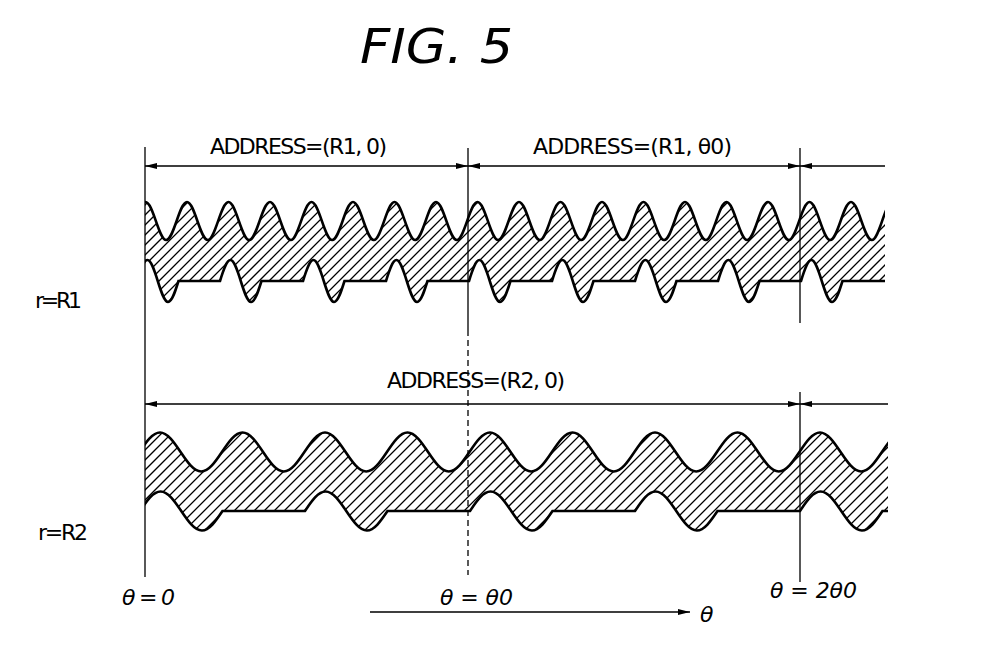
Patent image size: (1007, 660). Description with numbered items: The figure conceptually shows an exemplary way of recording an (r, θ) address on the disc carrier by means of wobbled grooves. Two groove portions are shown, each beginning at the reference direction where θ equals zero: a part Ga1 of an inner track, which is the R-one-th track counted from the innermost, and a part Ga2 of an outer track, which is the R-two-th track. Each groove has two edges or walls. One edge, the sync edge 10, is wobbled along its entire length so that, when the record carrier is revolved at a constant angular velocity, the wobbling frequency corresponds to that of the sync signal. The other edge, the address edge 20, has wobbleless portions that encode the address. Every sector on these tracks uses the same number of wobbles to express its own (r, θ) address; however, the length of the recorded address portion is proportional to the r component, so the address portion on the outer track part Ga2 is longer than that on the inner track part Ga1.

The sync edge 10 is at (855, 201).
The address edge 20 is at (844, 289).
The part of inner track Ga1 is at (512, 252).
The part of outer track Ga2 is at (515, 477).